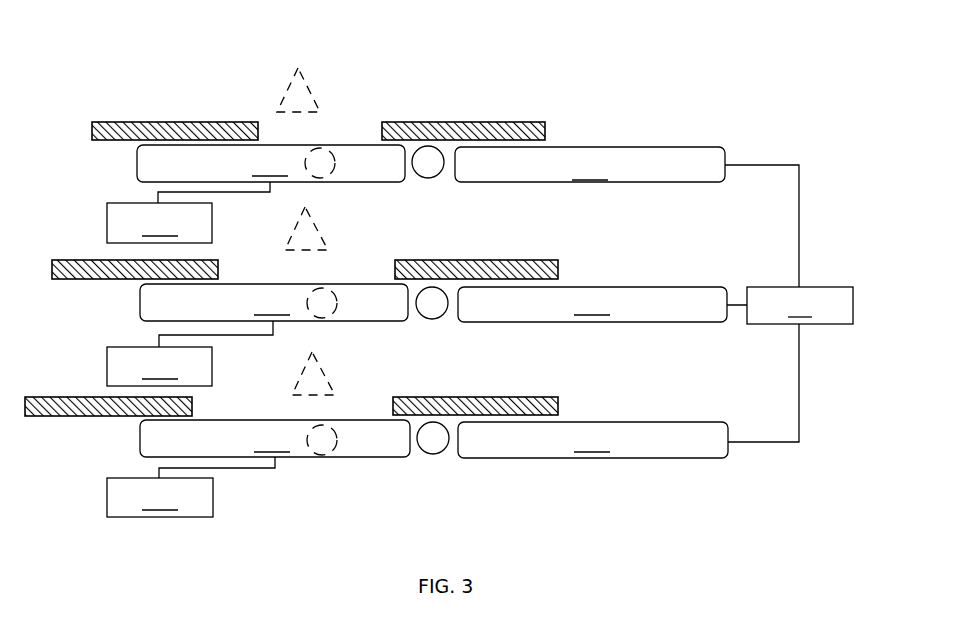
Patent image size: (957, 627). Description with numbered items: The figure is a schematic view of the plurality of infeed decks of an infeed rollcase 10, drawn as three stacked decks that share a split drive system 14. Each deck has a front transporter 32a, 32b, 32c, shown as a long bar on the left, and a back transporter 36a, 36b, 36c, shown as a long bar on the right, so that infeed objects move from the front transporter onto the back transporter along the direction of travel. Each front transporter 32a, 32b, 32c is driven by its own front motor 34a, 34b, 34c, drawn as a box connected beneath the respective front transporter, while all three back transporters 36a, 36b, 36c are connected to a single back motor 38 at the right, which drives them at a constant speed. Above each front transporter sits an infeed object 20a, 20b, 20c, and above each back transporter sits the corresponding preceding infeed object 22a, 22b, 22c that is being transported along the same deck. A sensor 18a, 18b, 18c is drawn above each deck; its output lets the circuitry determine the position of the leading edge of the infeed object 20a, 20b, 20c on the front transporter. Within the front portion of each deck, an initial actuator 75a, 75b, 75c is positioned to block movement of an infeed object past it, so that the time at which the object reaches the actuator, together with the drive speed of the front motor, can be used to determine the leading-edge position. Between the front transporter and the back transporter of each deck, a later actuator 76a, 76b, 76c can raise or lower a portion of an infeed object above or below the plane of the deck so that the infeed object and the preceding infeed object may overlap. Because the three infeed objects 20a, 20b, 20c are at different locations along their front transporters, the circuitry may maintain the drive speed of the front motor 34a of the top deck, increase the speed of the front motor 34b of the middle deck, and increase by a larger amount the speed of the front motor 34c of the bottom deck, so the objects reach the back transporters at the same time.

The infeed rollcase 10 is at (113, 67).
The split drive system 14 is at (810, 303).
The sensor 18a is at (320, 110).
The sensor 18b is at (326, 247).
The sensor 18c is at (333, 392).
The infeed object 20a is at (188, 121).
The infeed object 20b is at (117, 280).
The infeed object 20c is at (93, 417).
The preceding infeed object 22a is at (463, 121).
The preceding infeed object 22b is at (470, 259).
The preceding infeed object 22c is at (470, 396).
The front transporter 32a is at (271, 163).
The front transporter 32b is at (274, 302).
The front transporter 32c is at (275, 438).
The front motor 34a is at (188, 212).
The front motor 34b is at (190, 353).
The front motor 34c is at (191, 487).
The back transporter 36a is at (590, 164).
The back transporter 36b is at (592, 304).
The back transporter 36c is at (593, 440).
The back motor 38 is at (866, 293).
The initial actuator 75a is at (329, 156).
The initial actuator 75b is at (330, 315).
The initial actuator 75c is at (331, 452).
The later actuator 76a is at (430, 179).
The later actuator 76b is at (433, 319).
The later actuator 76c is at (435, 454).